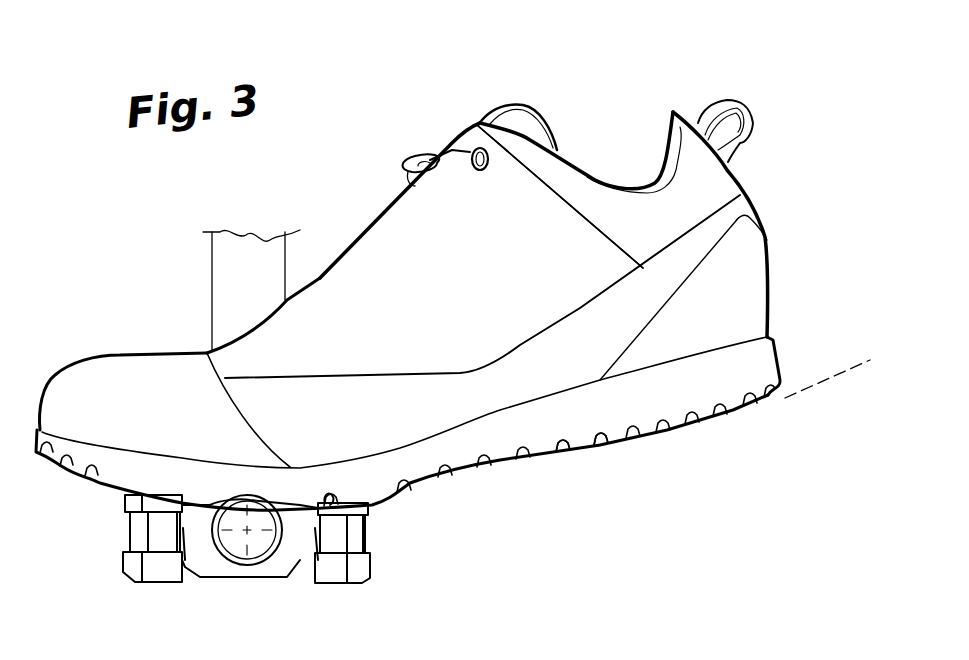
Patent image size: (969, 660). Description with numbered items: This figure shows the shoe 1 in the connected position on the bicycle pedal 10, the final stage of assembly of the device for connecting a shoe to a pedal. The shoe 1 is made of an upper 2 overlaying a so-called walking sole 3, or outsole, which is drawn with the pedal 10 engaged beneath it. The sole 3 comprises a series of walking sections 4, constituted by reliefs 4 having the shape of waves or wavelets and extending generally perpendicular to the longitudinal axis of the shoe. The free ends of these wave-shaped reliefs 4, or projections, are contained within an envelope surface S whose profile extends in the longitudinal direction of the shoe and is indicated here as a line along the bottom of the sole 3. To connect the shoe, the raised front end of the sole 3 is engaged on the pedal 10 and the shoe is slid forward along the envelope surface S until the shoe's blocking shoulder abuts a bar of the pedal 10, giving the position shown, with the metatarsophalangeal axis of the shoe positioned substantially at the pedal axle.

The shoe 1 is at (336, 184).
The upper 2 is at (562, 208).
The walking sole 3 is at (663, 402).
The walking sections 4 is at (600, 445).
The bicycle pedal 10 is at (377, 591).
The envelope surface S is at (825, 380).